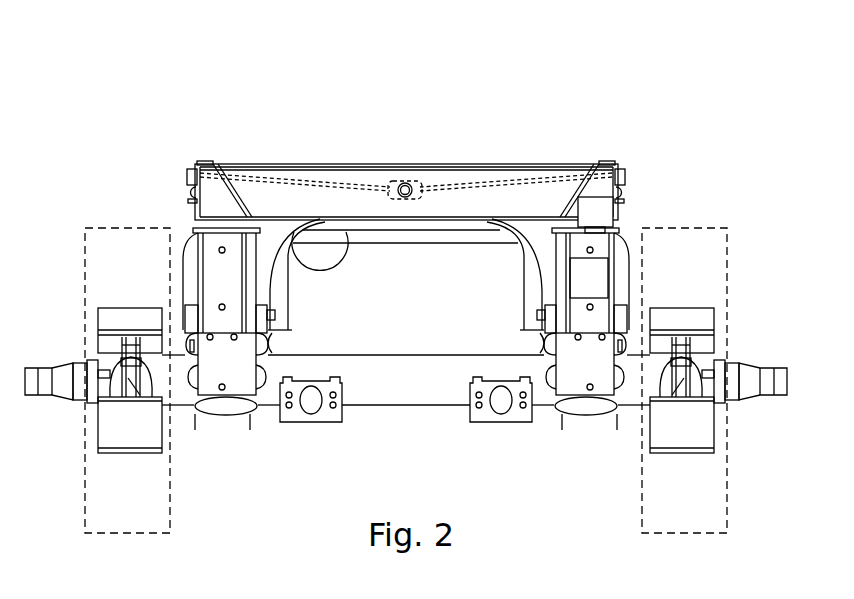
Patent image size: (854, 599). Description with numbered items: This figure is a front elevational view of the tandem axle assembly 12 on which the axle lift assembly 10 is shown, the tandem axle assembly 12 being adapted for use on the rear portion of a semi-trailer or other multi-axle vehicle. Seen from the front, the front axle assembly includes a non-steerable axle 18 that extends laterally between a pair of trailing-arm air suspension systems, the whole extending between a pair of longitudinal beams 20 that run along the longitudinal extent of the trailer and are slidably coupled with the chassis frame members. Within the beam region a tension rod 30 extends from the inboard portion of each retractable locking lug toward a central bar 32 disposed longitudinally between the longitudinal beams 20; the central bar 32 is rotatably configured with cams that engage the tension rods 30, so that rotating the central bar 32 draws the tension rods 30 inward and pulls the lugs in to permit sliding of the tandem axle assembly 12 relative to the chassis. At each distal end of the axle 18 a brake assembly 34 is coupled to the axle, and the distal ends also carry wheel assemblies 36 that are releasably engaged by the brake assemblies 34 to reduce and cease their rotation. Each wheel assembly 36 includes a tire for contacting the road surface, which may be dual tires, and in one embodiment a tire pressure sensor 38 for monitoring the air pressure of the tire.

The axle lift assembly 10 is at (412, 270).
The tandem axle assembly 12 is at (563, 104).
The axle 18 is at (405, 397).
The longitudinal beam 20 is at (200, 166).
The tension rod 30 is at (318, 185).
The central bar 32 is at (402, 185).
The brake assembly 34 is at (108, 295).
The wheel assembly 36 is at (100, 232).
The tire pressure sensor 38 is at (78, 416).